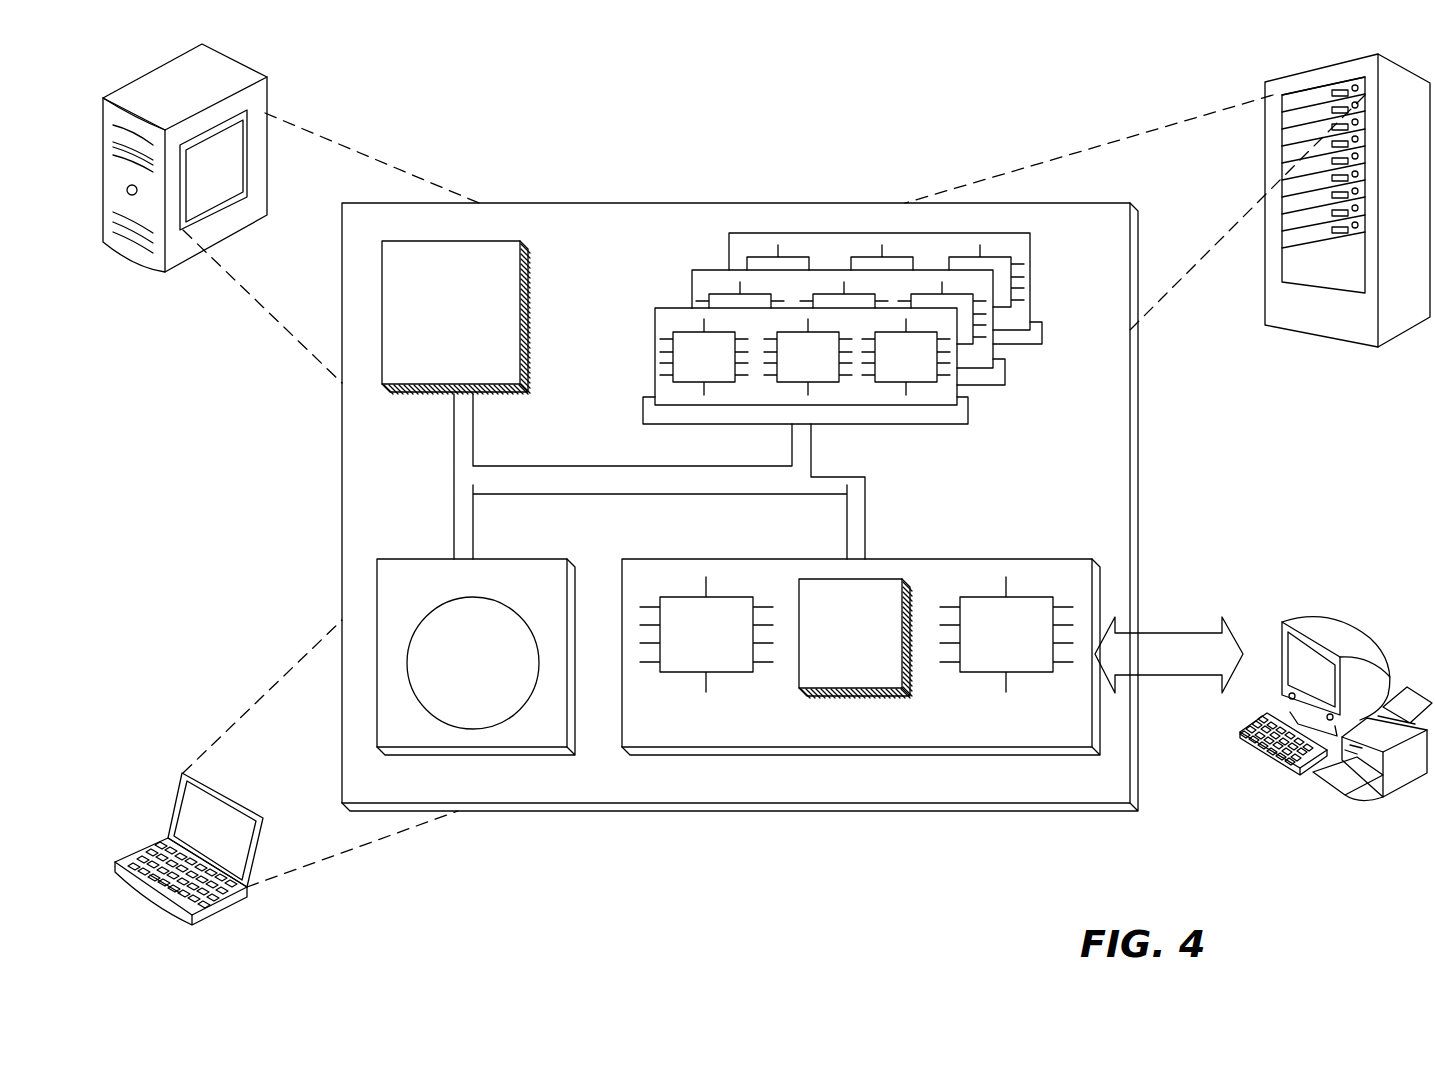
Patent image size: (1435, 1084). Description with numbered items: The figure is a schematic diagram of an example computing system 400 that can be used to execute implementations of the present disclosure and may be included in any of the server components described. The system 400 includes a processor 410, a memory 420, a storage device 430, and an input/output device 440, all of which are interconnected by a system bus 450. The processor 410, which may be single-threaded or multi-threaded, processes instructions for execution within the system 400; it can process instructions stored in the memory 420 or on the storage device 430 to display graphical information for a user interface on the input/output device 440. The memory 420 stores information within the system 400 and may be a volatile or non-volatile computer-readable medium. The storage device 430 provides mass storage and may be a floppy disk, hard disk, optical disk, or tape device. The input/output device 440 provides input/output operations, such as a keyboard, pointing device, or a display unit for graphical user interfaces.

The computing system 400 is at (548, 115).
The processor 410 is at (510, 376).
The memory 420 is at (1040, 388).
The storage device 430 is at (555, 738).
The input/output device 440 is at (1276, 624).
The system bus 450 is at (656, 490).